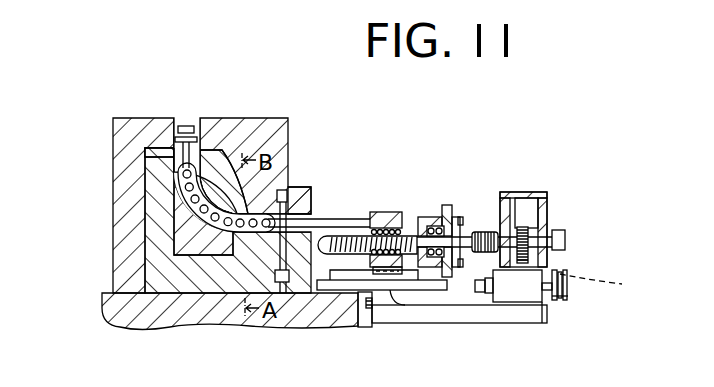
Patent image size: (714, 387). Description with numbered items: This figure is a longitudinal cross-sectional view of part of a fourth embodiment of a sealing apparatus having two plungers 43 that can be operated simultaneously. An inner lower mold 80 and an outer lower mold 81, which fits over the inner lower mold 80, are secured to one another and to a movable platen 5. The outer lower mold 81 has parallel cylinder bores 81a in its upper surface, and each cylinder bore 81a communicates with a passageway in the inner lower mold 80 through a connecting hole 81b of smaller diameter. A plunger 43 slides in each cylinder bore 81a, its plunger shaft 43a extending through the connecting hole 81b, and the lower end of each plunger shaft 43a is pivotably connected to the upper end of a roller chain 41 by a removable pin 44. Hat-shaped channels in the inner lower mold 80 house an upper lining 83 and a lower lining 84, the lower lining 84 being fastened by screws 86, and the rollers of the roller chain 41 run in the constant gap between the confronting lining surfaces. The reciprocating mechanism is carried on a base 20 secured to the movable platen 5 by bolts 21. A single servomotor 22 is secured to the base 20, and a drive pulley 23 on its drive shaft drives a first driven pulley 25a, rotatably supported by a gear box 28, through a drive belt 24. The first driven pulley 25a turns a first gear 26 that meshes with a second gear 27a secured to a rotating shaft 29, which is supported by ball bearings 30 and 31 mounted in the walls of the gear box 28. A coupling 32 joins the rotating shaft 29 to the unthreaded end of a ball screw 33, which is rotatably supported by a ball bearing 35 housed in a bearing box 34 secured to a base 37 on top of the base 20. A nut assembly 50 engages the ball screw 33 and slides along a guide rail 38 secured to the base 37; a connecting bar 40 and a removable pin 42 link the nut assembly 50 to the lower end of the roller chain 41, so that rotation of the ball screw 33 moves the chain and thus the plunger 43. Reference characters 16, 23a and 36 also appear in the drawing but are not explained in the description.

The movable platen 5 is at (140, 322).
The bolt 16 is at (186, 125).
The base 20 is at (470, 314).
The bolts 21 is at (370, 310).
The servomotor 22 is at (516, 292).
The drive pulley 23 is at (570, 296).
The motor bracket 23a is at (540, 312).
The drive belt 24 is at (566, 276).
The first driven pulley 25a is at (611, 289).
The first gear 26 is at (530, 260).
The second gear 27a is at (528, 212).
The gear box 28 is at (538, 195).
The rotating shaft 29 is at (531, 244).
The ball bearing 30 is at (507, 202).
The ball bearing 31 is at (549, 230).
The coupling 32 is at (486, 232).
The ball screw 33 is at (425, 216).
The bearing box 34 is at (436, 226).
The ball bearing 35 is at (447, 206).
The flange 36 is at (456, 217).
The base 37 is at (430, 292).
The guide rail 38 is at (396, 304).
The connecting bar 40 is at (378, 212).
The roller chain 41 is at (246, 238).
The removable pin 42 is at (320, 219).
The plunger 43 is at (212, 148).
The plunger shaft 43a is at (168, 153).
The removable pin 44 is at (232, 142).
The nut assembly 50 is at (388, 210).
The inner lower mold 80 is at (174, 238).
The outer lower mold 81 is at (114, 136).
The cylinder bore 81a is at (177, 142).
The connecting hole 81b is at (173, 144).
The upper lining 83 is at (306, 192).
The lower lining 84 is at (152, 236).
The screws 86 is at (287, 286).